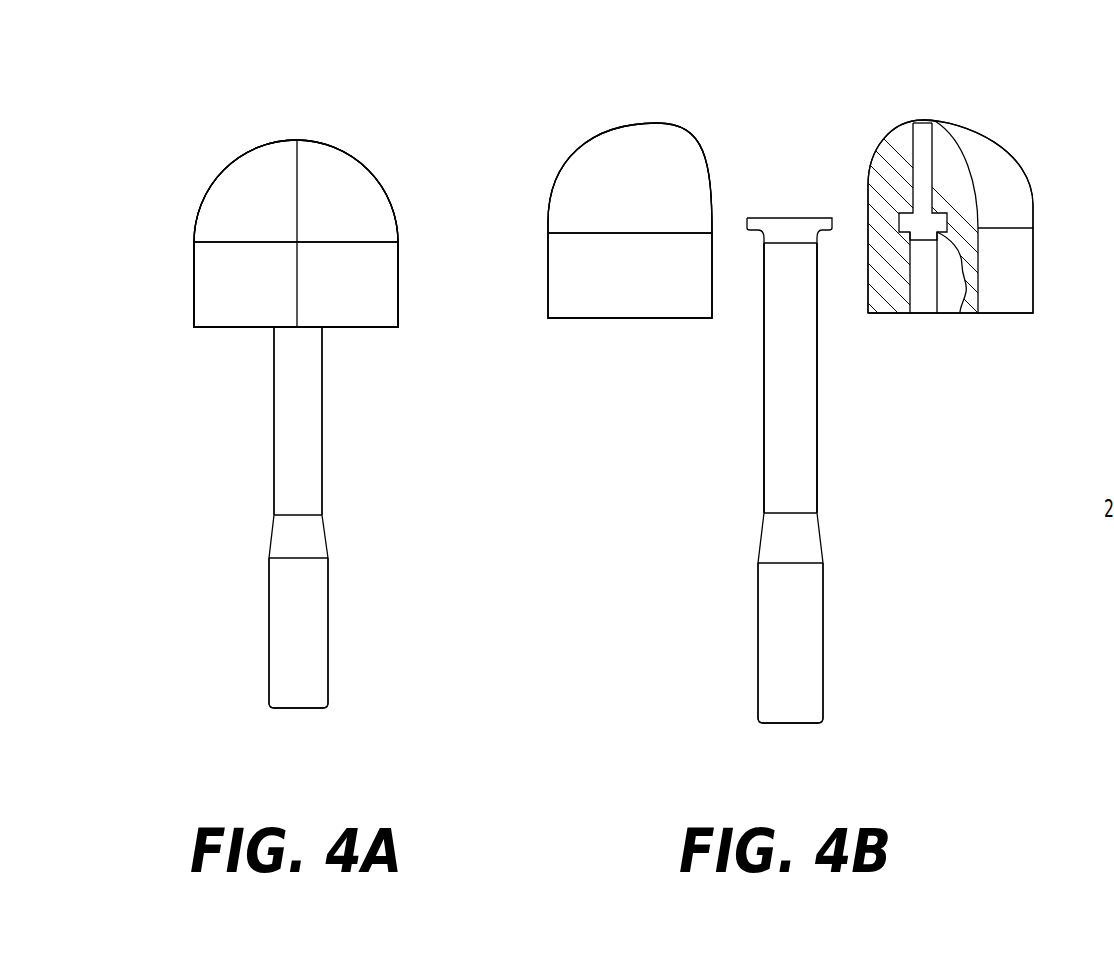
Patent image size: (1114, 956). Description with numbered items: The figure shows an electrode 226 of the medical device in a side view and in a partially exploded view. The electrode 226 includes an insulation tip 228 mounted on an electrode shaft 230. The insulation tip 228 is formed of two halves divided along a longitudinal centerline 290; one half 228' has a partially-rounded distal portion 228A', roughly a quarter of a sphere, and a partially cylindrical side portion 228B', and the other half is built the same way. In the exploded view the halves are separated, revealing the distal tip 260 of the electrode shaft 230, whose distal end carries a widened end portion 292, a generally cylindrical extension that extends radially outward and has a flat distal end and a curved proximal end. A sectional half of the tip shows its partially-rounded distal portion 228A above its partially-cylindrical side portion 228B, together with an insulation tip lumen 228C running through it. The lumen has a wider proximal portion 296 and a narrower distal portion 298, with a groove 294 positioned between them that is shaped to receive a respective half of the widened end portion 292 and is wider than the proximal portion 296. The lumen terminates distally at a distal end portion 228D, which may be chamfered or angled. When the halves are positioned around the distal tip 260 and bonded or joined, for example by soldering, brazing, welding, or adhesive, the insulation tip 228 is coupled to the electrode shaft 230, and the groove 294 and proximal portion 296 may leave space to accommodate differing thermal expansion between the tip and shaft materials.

In FIG. 4A, the electrode 226 is at (265, 440).
In FIG. 4B, the electrode 226 is at (727, 445).
In FIG. 4A, the insulation tip 228 is at (287, 194).
In FIG. 4A, the half 228' is at (201, 233).
In FIG. 4B, the half 228' is at (615, 193).
In FIG. 4A, the partially-rounded distal portion 228A' is at (222, 178).
In FIG. 4B, the partially-rounded distal portion 228A' is at (597, 178).
In FIG. 4A, the partially cylindrical side portion 228B' is at (202, 287).
In FIG. 4B, the partially cylindrical side portion 228B' is at (588, 276).
In FIG. 4B, the partially-rounded distal portion 228A is at (1018, 174).
In FIG. 4B, the partially-cylindrical side portion 228B is at (1046, 270).
In FIG. 4B, the insulation tip lumen 228C is at (925, 132).
In FIG. 4B, the distal end portion 228D is at (921, 120).
In FIG. 4A, the electrode shaft 230 is at (329, 490).
In FIG. 4B, the electrode shaft 230 is at (822, 483).
In FIG. 4B, the distal tip 260 is at (818, 287).
In FIG. 4A, the longitudinal centerline 290 is at (300, 165).
In FIG. 4B, the widened end portion 292 is at (770, 226).
In FIG. 4B, the groove 294 is at (962, 305).
In FIG. 4B, the proximal portion 296 is at (920, 300).
In FIG. 4B, the distal portion 298 is at (910, 120).